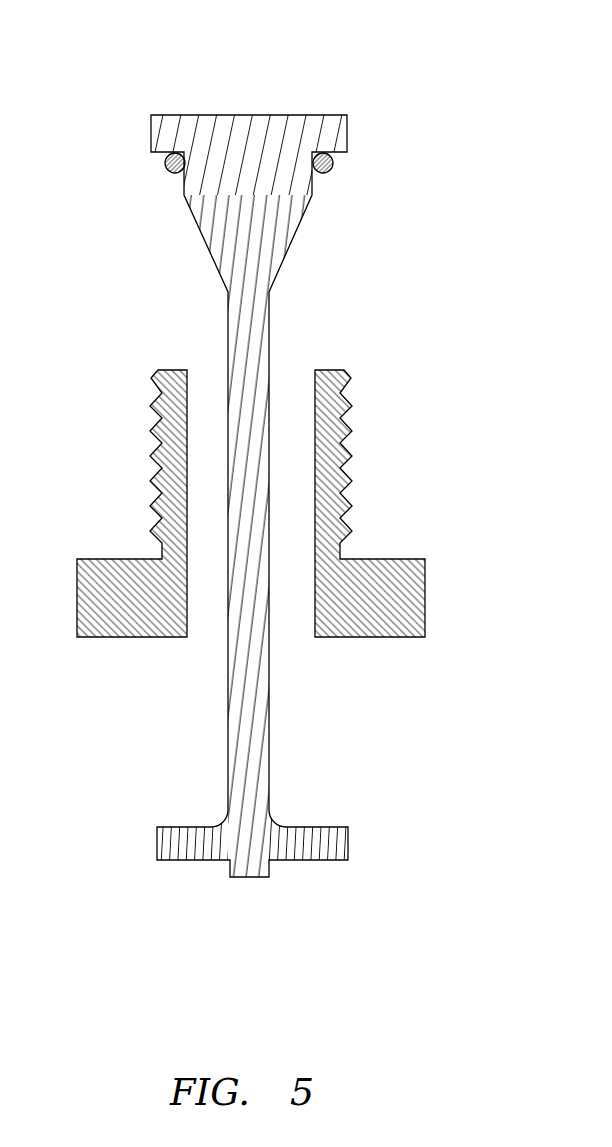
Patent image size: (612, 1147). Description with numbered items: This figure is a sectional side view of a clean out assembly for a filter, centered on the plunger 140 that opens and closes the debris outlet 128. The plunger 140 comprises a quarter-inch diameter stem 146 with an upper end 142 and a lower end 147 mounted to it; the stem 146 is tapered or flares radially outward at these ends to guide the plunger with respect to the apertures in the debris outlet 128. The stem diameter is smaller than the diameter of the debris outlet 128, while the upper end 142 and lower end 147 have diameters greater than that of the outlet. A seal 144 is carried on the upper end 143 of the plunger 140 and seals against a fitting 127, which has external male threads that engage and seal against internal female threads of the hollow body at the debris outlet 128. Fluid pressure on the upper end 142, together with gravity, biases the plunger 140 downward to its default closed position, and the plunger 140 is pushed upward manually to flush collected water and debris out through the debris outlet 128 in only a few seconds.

The plunger 140 is at (255, 458).
The upper end 142 is at (169, 96).
The upper end 143 is at (153, 153).
The seal 144 is at (333, 168).
The fitting 127 is at (330, 371).
The debris outlet 128 is at (208, 648).
The stem 146 is at (270, 743).
The lower end 147 is at (190, 861).